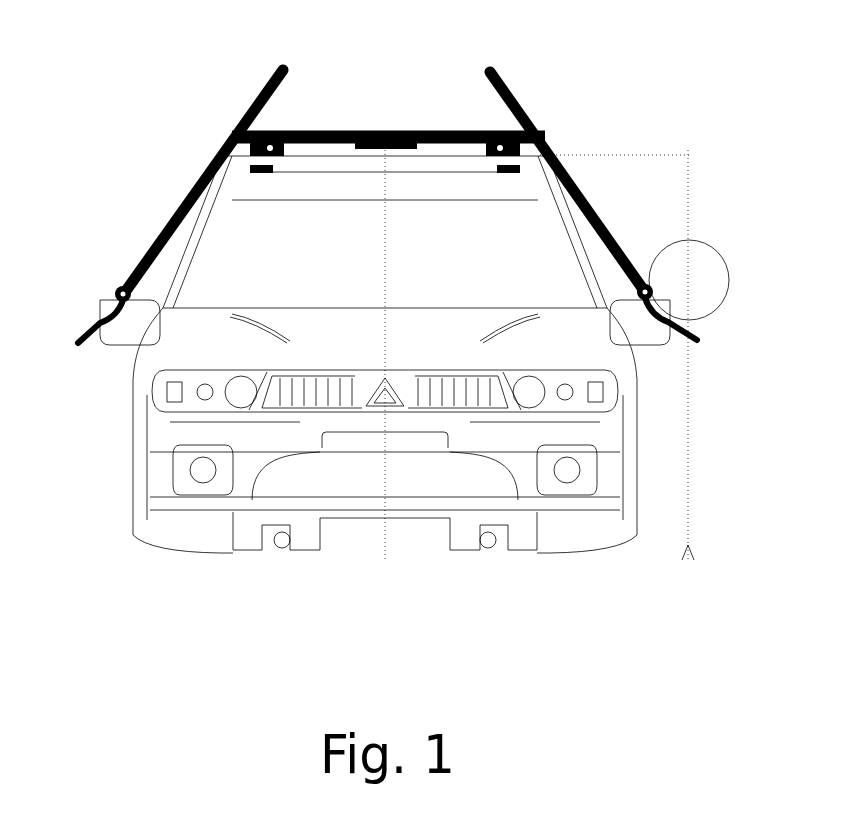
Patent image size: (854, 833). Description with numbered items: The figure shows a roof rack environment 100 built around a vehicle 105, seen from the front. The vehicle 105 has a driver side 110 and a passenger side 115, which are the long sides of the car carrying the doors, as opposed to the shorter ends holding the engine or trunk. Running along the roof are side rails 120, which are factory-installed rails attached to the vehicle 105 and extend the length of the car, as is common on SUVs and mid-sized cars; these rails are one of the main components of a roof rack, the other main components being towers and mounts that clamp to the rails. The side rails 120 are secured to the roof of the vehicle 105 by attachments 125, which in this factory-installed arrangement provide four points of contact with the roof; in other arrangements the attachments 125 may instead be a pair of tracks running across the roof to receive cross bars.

The roof rack environment 100 is at (387, 178).
The vehicle 105 is at (638, 395).
The driver side 110 is at (612, 159).
The passenger side 115 is at (163, 157).
The side rails 120 is at (257, 147).
The attachments 125 is at (254, 172).